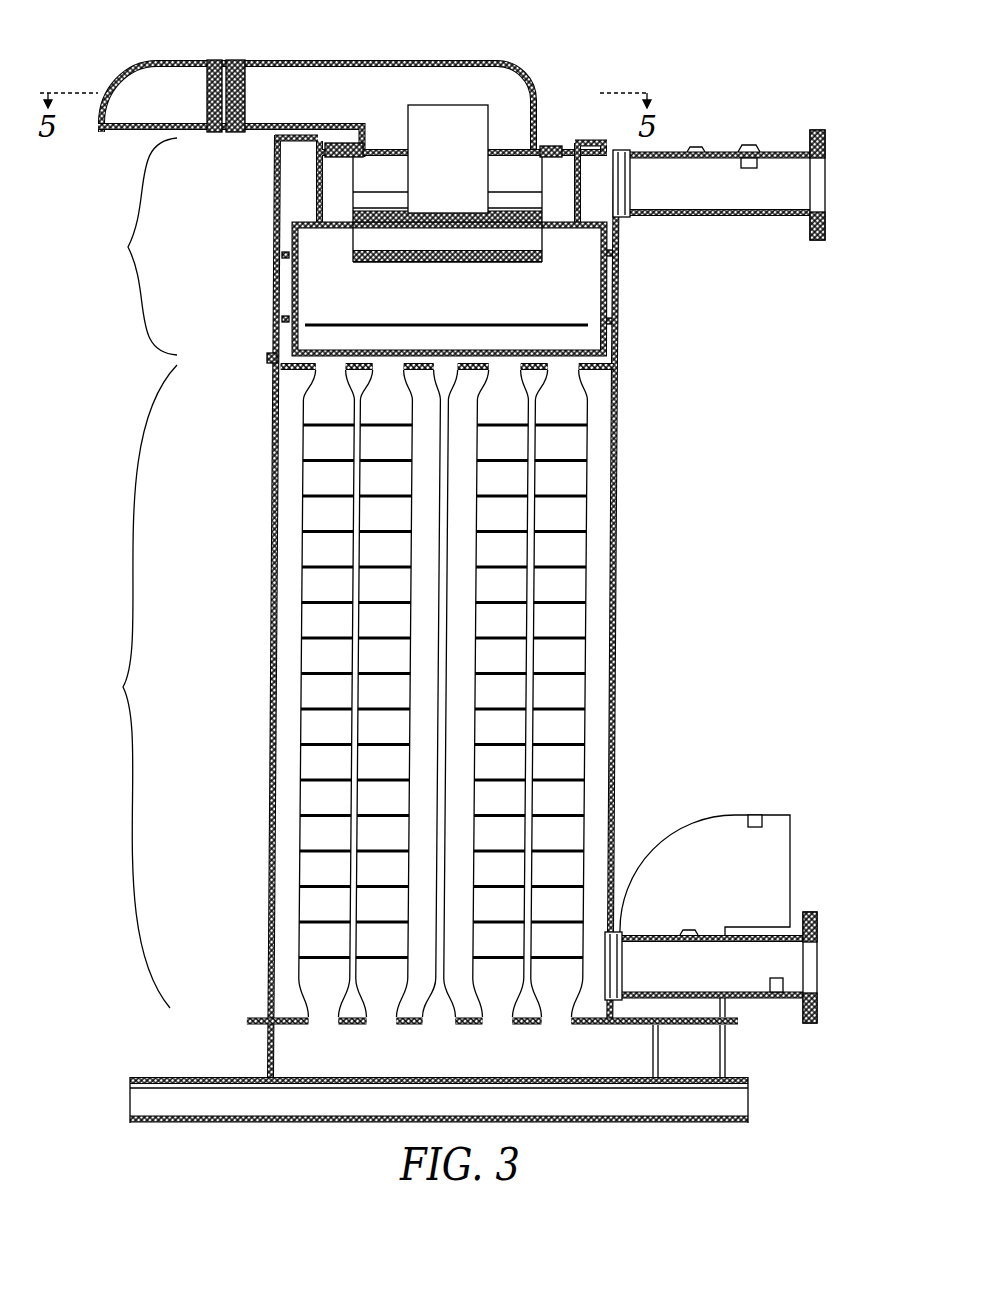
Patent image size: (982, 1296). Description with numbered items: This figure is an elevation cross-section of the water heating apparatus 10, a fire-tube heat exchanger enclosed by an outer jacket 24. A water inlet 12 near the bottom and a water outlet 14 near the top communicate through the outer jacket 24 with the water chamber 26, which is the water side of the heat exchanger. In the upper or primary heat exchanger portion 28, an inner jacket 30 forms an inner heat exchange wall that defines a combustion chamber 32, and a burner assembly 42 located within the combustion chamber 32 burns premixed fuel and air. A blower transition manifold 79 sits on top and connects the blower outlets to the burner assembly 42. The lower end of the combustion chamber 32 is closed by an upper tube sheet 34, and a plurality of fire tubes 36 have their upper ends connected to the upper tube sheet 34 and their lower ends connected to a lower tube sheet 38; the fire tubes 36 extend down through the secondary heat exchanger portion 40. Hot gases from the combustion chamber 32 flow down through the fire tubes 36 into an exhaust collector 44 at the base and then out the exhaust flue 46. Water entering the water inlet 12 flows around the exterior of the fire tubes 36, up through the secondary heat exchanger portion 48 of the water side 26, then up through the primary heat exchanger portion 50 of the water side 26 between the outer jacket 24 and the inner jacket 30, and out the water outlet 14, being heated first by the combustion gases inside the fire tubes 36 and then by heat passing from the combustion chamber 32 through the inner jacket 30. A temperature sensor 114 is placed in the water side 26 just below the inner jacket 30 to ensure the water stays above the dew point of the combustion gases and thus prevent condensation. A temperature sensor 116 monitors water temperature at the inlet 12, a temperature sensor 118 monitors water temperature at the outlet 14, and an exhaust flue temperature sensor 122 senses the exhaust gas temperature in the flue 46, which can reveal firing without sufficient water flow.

The water heating apparatus 10 is at (813, 353).
The water inlet 12 is at (820, 950).
The water outlet 14 is at (820, 180).
The outer jacket 24 is at (612, 775).
The water chamber 26 is at (654, 390).
The primary heat exchanger portion 28 is at (128, 247).
The inner jacket 30 is at (320, 186).
The combustion chamber 32 is at (448, 300).
The upper tube sheet 34 is at (595, 362).
The fire tubes 36 is at (575, 520).
The lower tube sheet 38 is at (300, 1012).
The secondary heat exchanger portion 40 is at (123, 687).
The burner assembly 42 is at (540, 173).
The exhaust collector 44 is at (625, 1060).
The exhaust flue 46 is at (792, 833).
The secondary heat exchanger portion of water side 48 is at (600, 580).
The primary heat exchanger portion of water side 50 is at (617, 280).
The blower transition manifold 79 is at (362, 60).
The temperature sensor 114 is at (268, 362).
The temperature sensor 116 is at (778, 992).
The temperature sensor 118 is at (750, 145).
The exhaust flue temperature sensor 122 is at (755, 815).